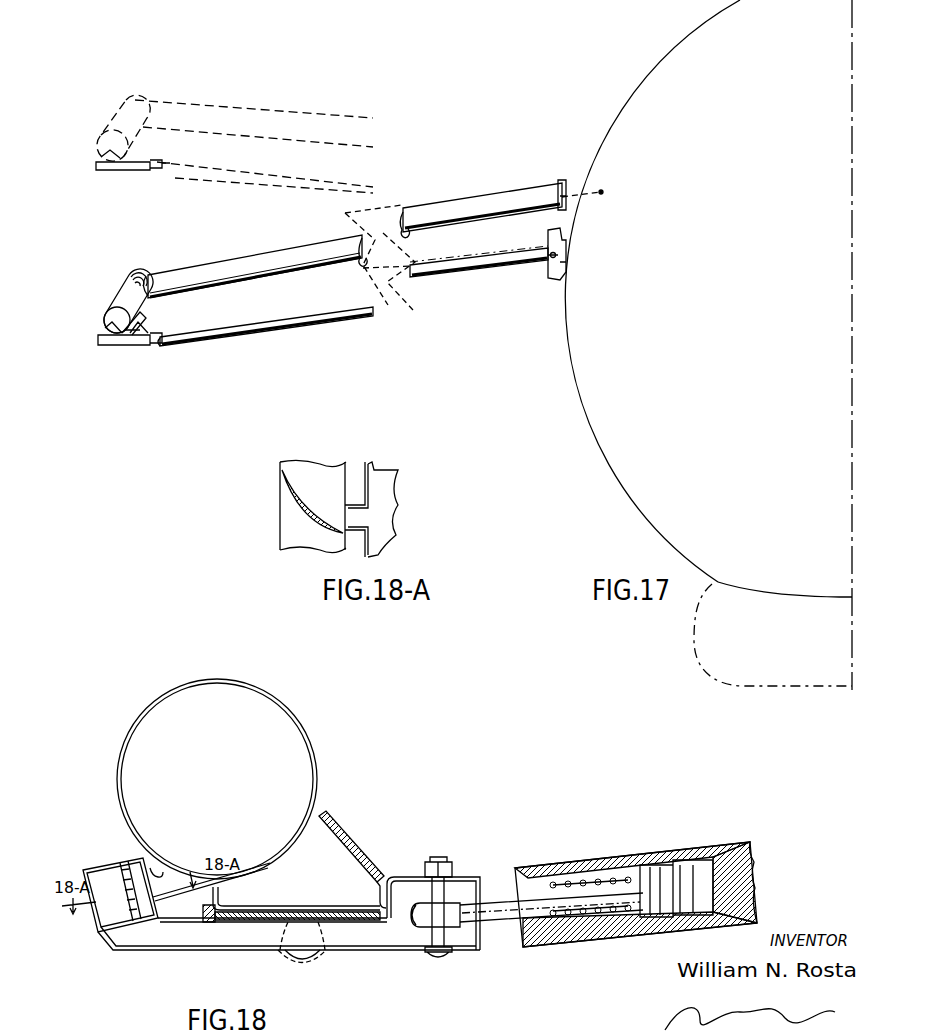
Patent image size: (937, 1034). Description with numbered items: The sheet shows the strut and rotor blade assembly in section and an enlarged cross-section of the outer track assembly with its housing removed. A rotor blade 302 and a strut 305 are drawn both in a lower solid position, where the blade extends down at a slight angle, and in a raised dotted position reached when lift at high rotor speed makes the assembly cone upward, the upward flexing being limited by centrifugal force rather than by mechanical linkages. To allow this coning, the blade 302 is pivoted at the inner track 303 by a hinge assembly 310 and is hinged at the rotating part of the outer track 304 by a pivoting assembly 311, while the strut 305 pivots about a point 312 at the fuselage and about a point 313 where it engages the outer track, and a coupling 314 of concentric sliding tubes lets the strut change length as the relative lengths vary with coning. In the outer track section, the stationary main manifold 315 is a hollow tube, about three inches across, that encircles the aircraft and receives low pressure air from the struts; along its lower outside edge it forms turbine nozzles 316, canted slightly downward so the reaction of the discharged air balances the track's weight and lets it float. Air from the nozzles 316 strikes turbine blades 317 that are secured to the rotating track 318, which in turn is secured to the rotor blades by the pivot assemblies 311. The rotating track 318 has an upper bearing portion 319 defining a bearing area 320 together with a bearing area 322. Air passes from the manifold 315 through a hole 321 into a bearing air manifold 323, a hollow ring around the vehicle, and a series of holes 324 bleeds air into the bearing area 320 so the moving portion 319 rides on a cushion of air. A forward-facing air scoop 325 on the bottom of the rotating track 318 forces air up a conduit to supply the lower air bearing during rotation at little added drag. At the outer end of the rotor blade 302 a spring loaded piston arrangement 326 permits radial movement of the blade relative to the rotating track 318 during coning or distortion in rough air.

In FIG. 17, the rotor blade 302 is at (270, 326).
In FIG. 18, the rotor blade 302 is at (738, 852).
In FIG. 17, the inner track 303 is at (548, 268).
In FIG. 17, the rotating part of the outer track 304 is at (126, 299).
In FIG. 17, the strut 305 is at (326, 120).
In FIG. 17, the hinge assembly 310 is at (545, 240).
In FIG. 17, the pivoting assembly 311 is at (144, 345).
In FIG. 18, the pivoting assembly 311 is at (430, 922).
In FIG. 17, the pivot point 312 is at (601, 192).
In FIG. 17, the pivot point 313 is at (136, 277).
In FIG. 17, the coupling 314 is at (561, 188).
In FIG. 18-A, the main manifold 315 is at (388, 514).
In FIG. 18, the main manifold 315 is at (289, 714).
In FIG. 18-A, the turbine nozzle 316 is at (358, 500).
In FIG. 18, the turbine nozzle 316 is at (165, 882).
In FIG. 18-A, the turbine blade 317 is at (290, 502).
In FIG. 18, the turbine blade 317 is at (120, 862).
In FIG. 18, the rotating track 318 is at (218, 952).
In FIG. 18, the upper bearing portion 319 is at (362, 862).
In FIG. 18, the bearing area 320 is at (344, 835).
In FIG. 18, the hole 321 is at (316, 922).
In FIG. 18, the bearing area 322 is at (268, 862).
In FIG. 18, the bearing air manifold 323 is at (278, 908).
In FIG. 18, the holes 324 is at (345, 858).
In FIG. 18, the air scoop 325 is at (306, 955).
In FIG. 18, the spring loaded piston arrangement 326 is at (684, 852).